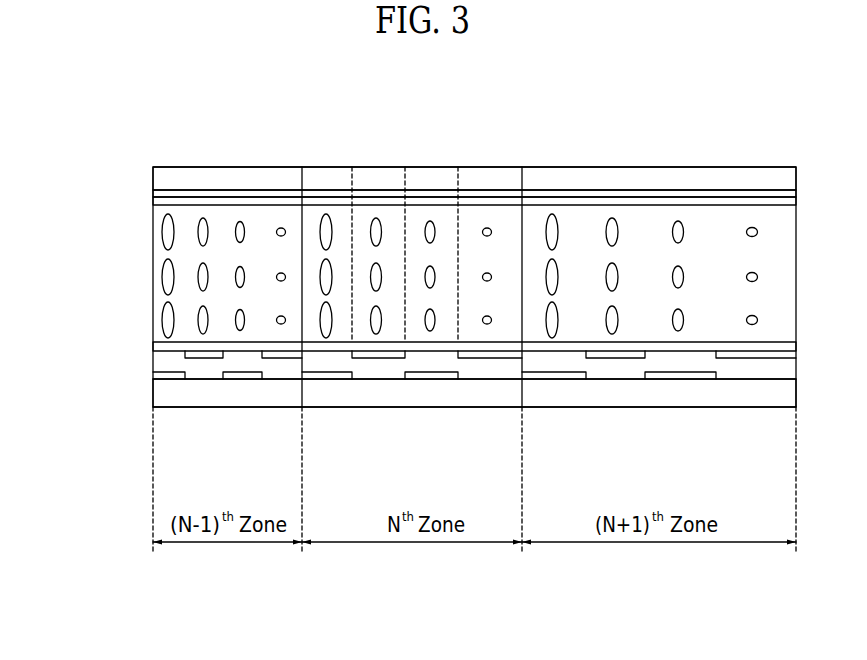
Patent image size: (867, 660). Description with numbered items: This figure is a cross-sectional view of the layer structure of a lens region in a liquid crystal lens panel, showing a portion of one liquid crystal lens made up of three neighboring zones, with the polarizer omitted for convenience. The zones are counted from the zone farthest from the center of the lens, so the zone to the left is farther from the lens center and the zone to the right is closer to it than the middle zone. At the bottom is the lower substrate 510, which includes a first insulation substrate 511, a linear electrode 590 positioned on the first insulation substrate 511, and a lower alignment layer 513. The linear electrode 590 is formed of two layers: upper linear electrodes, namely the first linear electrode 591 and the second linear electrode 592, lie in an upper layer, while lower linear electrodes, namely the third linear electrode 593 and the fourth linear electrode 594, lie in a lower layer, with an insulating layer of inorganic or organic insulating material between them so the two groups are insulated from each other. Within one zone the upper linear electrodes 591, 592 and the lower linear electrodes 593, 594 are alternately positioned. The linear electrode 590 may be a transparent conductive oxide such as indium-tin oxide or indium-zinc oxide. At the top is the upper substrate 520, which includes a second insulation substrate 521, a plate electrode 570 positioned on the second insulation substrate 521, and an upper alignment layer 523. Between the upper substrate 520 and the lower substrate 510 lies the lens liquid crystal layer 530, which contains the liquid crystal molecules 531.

The lower substrate 510 is at (83, 333).
The first insulation substrate 511 is at (153, 395).
The lower alignment layer 513 is at (153, 347).
The upper substrate 520 is at (80, 147).
The second insulation substrate 521 is at (160, 178).
The upper alignment layer 523 is at (153, 206).
The lens liquid crystal layer 530 is at (152, 305).
The liquid crystal molecules 531 is at (154, 278).
The plate electrode 570 is at (153, 195).
The linear electrode 590 is at (83, 558).
The first linear electrode 591 is at (373, 359).
The second linear electrode 592 is at (475, 359).
The third linear electrode 593 is at (418, 380).
The fourth linear electrode 594 is at (312, 380).